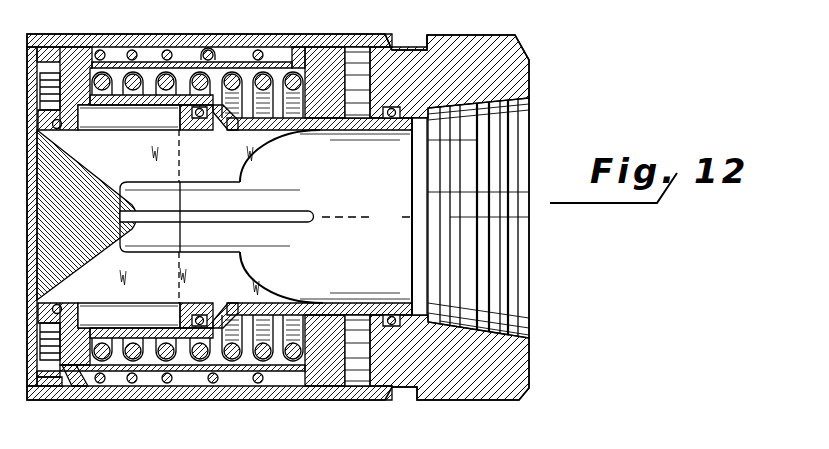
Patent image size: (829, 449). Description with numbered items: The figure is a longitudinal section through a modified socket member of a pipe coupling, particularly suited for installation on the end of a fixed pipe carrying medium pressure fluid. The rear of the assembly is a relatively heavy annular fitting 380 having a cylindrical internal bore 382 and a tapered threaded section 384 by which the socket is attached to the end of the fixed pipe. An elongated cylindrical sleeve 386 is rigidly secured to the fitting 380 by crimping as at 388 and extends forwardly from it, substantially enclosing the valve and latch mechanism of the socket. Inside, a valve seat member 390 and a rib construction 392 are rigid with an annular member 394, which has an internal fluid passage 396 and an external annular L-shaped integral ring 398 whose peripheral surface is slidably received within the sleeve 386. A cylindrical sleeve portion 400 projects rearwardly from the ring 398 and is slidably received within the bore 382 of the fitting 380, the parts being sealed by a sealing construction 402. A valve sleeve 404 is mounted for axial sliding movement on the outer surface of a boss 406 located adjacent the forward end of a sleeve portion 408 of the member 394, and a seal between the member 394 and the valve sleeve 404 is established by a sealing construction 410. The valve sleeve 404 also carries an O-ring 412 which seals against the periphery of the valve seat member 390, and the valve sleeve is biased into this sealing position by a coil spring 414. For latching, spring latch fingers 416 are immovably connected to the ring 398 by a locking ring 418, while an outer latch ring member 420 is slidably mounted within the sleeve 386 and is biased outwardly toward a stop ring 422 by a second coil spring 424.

The annular fitting 380 is at (487, 36).
The cylindrical internal bore 382 is at (408, 132).
The tapered threaded section 384 is at (531, 106).
The elongated cylindrical sleeve 386 is at (297, 36).
The crimping 388 is at (412, 47).
The valve seat member 390 is at (102, 176).
The rib construction 392 is at (308, 203).
The annular member 394 is at (367, 221).
The internal fluid passage 396 is at (340, 131).
The L-shaped integral ring 398 is at (350, 49).
The cylindrical sleeve portion 400 is at (351, 319).
The sealing construction 402 is at (399, 108).
The valve sleeve 404 is at (143, 97).
The boss 406 is at (231, 131).
The sleeve portion 408 is at (286, 176).
The sealing construction 410 is at (206, 131).
The O-ring 412 is at (82, 117).
The coil spring 414 is at (238, 356).
The spring latch fingers 416 is at (185, 62).
The locking ring 418 is at (283, 70).
The outer latch ring member 420 is at (70, 390).
The stop ring 422 is at (57, 400).
The coil spring 424 is at (209, 48).